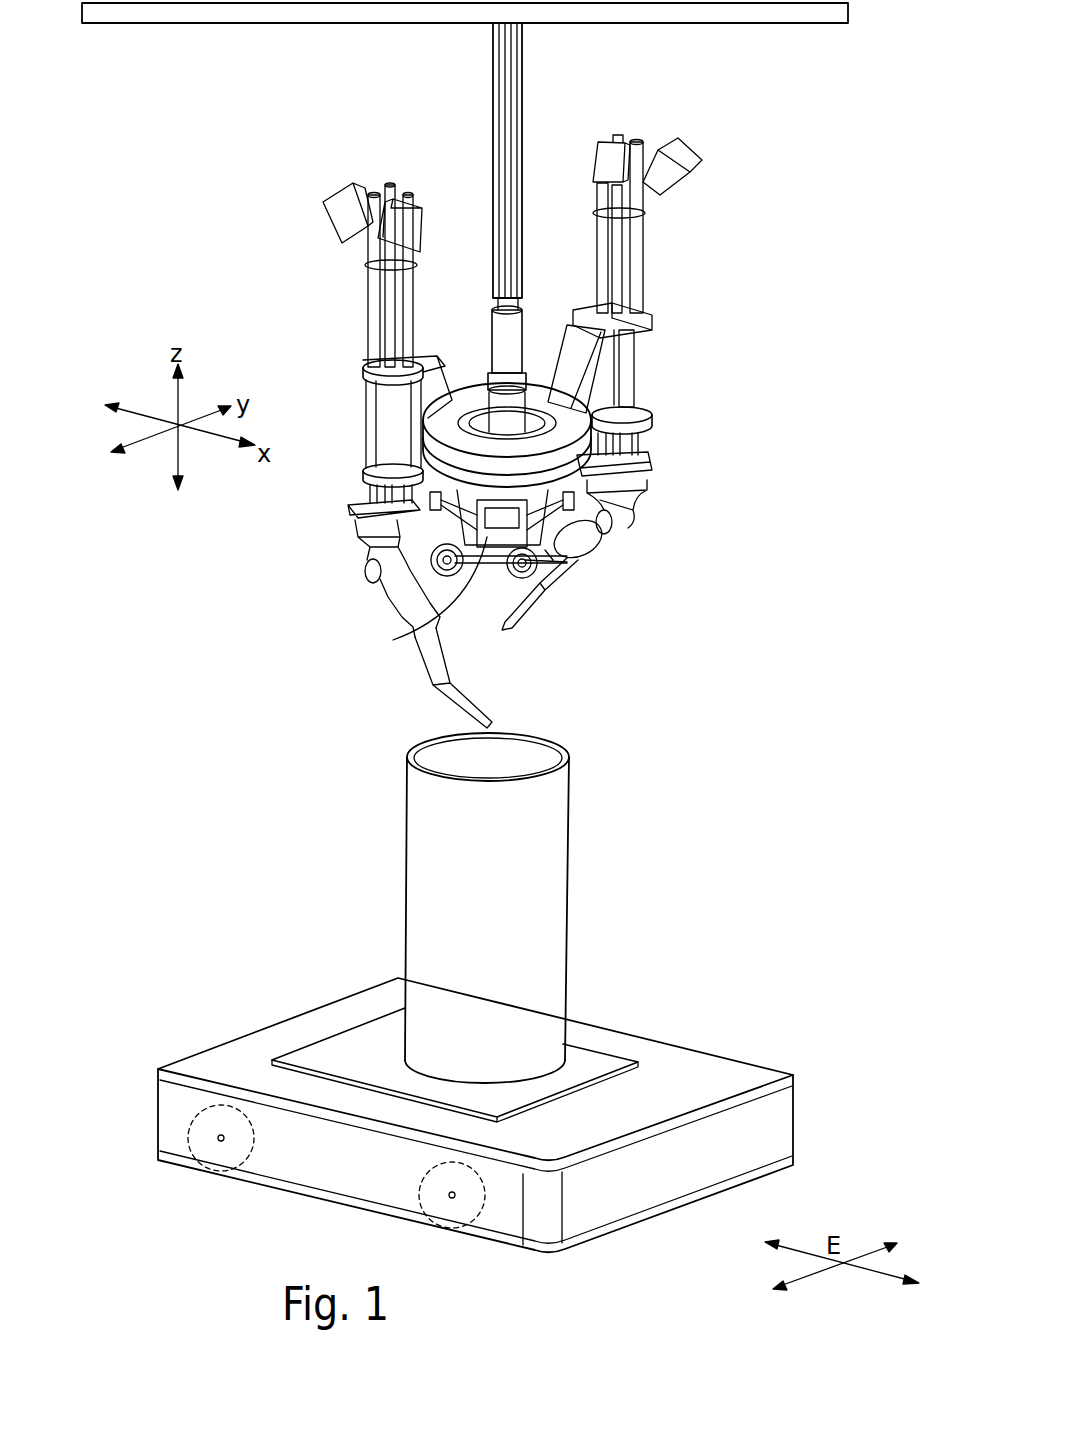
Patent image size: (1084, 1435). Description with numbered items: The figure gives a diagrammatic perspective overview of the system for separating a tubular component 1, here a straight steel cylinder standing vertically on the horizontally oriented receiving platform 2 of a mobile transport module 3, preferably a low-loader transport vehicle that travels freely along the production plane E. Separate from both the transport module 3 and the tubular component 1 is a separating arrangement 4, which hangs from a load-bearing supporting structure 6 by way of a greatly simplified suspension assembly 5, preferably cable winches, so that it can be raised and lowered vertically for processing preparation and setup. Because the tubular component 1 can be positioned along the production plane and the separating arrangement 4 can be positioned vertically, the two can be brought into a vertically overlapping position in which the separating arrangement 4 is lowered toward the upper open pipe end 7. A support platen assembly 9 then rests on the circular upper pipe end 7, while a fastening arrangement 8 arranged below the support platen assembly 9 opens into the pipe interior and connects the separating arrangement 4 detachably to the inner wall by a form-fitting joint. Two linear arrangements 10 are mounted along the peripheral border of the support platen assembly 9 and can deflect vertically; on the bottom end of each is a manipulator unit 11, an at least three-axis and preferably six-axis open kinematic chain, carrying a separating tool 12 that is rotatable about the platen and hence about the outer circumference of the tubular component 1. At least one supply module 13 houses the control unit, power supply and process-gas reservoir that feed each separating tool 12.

The tubular component 1 is at (545, 836).
The receiving platform 2 is at (585, 1060).
The mobile transport module 3 is at (297, 1157).
The separating arrangement 4 is at (708, 520).
The suspension assembly 5 is at (500, 88).
The supporting structure 6 is at (160, 24).
The upper open pipe end 7 is at (552, 737).
The fastening arrangement 8 is at (443, 592).
The support platen assembly 9 is at (586, 442).
The linear arrangement 10 is at (375, 298).
The manipulator unit 11 is at (382, 584).
The separating tool 12 is at (460, 710).
The supply module 13 is at (400, 211).